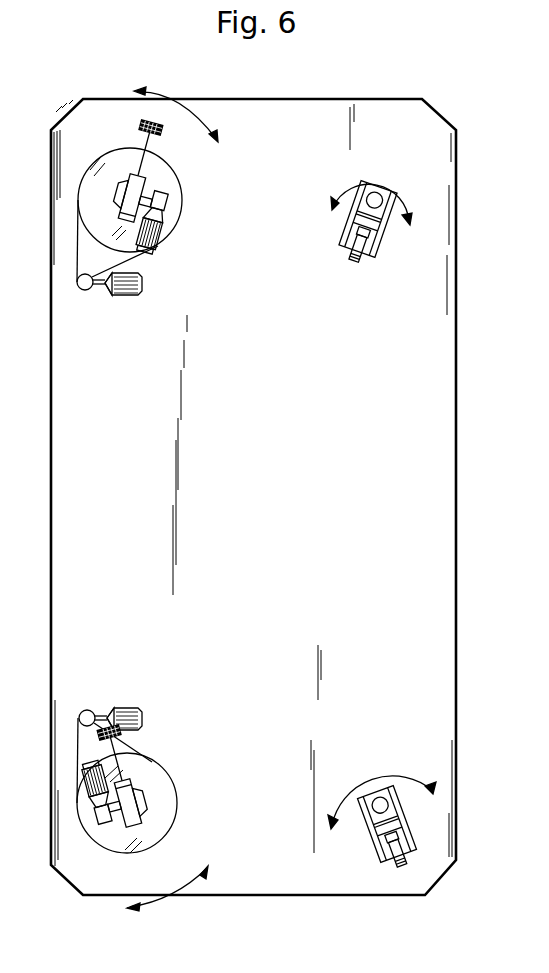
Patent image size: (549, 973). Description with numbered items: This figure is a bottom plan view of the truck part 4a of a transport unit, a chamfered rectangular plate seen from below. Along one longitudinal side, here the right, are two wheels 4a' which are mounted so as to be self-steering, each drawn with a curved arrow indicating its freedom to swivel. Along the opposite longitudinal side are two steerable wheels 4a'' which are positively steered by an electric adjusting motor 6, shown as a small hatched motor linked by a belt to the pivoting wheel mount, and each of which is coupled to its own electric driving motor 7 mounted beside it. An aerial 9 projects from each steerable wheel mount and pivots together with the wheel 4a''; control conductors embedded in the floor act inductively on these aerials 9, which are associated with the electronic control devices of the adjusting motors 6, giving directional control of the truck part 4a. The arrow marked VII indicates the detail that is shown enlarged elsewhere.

The truck part 4a is at (253, 468).
The self-steering wheels 4a' is at (377, 533).
The positively steered wheels 4a'' is at (154, 480).
The electric adjusting motor 6 is at (124, 296).
The electric driving motor 7 is at (160, 240).
The aerials 9 is at (142, 118).
The detail VII is at (200, 747).